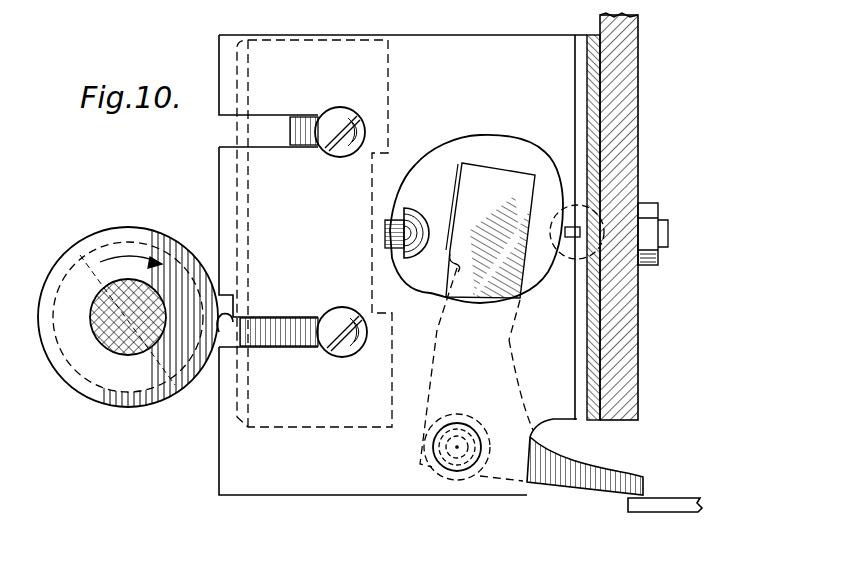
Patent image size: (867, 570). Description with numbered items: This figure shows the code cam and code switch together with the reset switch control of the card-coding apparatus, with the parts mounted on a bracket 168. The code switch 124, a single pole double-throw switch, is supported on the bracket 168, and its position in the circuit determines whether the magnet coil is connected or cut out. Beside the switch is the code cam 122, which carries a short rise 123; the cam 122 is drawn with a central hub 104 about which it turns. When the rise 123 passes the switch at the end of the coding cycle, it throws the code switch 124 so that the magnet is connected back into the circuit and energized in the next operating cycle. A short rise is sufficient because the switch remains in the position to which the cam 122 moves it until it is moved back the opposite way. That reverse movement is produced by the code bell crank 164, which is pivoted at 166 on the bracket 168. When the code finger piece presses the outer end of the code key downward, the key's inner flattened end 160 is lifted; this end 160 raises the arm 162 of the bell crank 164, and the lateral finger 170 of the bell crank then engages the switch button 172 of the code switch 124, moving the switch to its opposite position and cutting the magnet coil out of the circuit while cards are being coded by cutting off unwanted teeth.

The shaft hub 104 is at (108, 298).
The code cam 122 is at (92, 390).
The short rise 123 is at (149, 405).
The code switch 124 is at (280, 337).
The inner flattened end 160 is at (690, 498).
The arm 162 is at (611, 468).
The code bell crank 164 is at (504, 290).
The pivot 166 is at (455, 452).
The bracket 168 is at (298, 487).
The lateral finger 170 is at (466, 196).
The switch button 172 is at (416, 214).